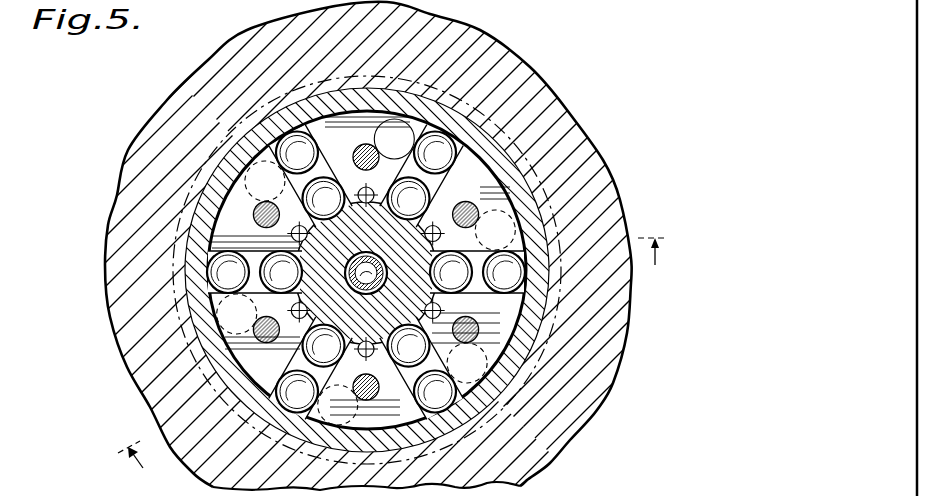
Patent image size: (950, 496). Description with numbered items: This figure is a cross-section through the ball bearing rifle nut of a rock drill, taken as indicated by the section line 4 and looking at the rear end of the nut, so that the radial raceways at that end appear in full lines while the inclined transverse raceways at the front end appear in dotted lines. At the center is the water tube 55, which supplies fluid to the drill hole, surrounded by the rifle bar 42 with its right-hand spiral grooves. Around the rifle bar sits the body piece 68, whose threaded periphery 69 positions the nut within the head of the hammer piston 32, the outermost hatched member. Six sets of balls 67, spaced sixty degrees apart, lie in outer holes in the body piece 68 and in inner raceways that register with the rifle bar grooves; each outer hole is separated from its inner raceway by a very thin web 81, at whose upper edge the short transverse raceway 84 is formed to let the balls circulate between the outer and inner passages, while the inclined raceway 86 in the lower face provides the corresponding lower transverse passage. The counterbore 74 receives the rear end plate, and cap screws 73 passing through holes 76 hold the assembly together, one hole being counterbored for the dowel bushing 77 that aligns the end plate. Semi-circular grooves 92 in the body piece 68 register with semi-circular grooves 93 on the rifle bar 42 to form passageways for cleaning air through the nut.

The hammer piston 32 is at (107, 272).
The counterbore 74 is at (212, 232).
The balls 67 is at (210, 275).
The cap screws 73 is at (256, 208).
The transverse raceway 84 is at (393, 170).
The dowel bushing 77 is at (464, 200).
The water tube 55 is at (372, 250).
The rifle bar 42 is at (412, 267).
The web 81 is at (470, 252).
The body piece 68 is at (546, 273).
The periphery 69 is at (553, 318).
The holes 76 is at (474, 322).
The semi-circular grooves 92 is at (294, 305).
The semi-circular grooves 93 is at (309, 308).
The inclined raceway 86 is at (293, 354).
The section line 4- 4 is at (391, 339).